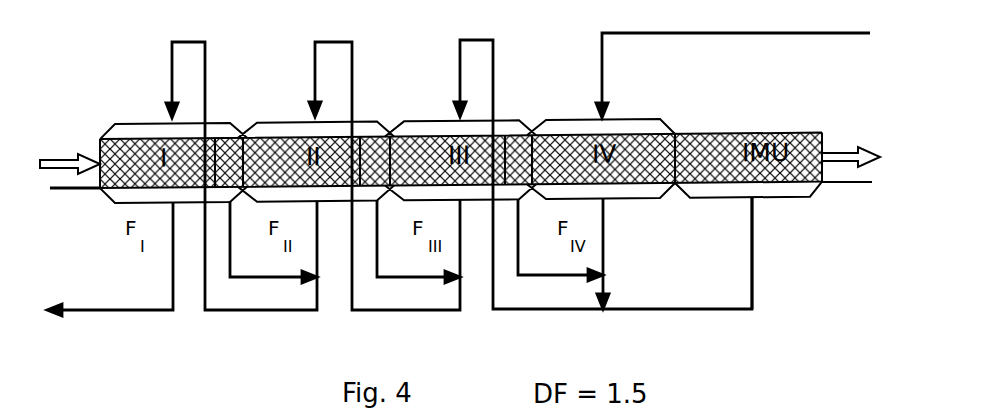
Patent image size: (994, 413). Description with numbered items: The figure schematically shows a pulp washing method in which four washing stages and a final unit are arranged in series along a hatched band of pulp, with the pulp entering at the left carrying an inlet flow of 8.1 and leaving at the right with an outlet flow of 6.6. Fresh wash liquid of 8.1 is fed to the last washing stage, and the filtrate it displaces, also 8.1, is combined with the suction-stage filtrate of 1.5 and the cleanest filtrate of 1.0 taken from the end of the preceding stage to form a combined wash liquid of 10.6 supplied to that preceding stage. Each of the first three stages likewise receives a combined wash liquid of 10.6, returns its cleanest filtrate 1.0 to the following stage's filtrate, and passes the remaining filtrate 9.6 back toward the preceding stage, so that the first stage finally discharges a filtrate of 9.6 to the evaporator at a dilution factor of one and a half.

The fresh wash liquid flow 8.1 is at (450, 155).
The combined wash liquid flow 10.6 is at (459, 159).
The filtrate flow to preceding stage 9.6 is at (274, 259).
The cleanest filtrate flow 1.0 is at (416, 241).
The suction stage filtrate flow 1.5 is at (772, 253).
The pulp outlet flow 6.6 is at (856, 135).